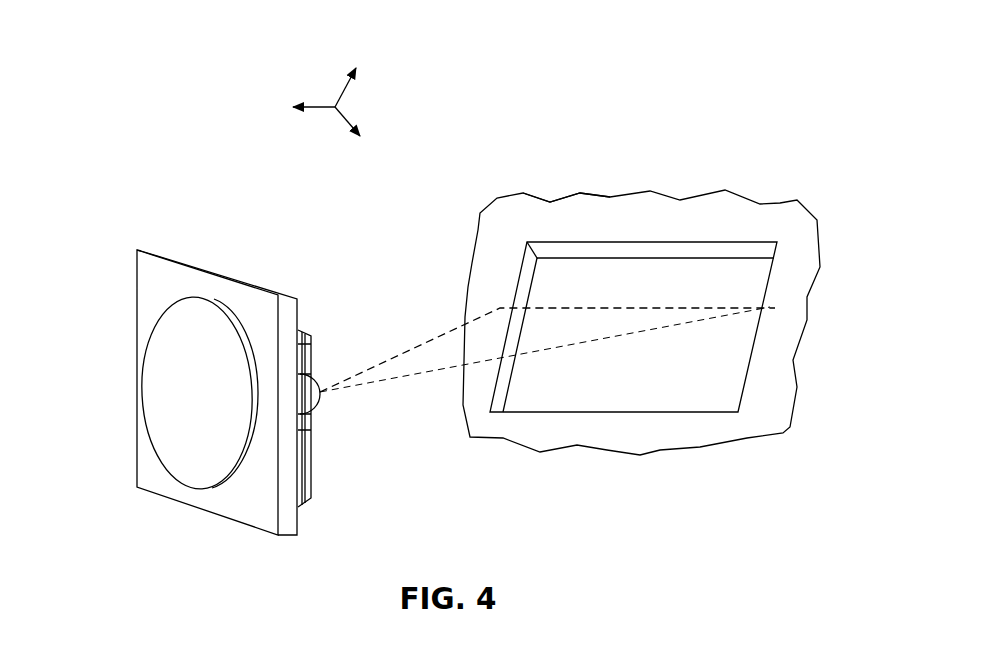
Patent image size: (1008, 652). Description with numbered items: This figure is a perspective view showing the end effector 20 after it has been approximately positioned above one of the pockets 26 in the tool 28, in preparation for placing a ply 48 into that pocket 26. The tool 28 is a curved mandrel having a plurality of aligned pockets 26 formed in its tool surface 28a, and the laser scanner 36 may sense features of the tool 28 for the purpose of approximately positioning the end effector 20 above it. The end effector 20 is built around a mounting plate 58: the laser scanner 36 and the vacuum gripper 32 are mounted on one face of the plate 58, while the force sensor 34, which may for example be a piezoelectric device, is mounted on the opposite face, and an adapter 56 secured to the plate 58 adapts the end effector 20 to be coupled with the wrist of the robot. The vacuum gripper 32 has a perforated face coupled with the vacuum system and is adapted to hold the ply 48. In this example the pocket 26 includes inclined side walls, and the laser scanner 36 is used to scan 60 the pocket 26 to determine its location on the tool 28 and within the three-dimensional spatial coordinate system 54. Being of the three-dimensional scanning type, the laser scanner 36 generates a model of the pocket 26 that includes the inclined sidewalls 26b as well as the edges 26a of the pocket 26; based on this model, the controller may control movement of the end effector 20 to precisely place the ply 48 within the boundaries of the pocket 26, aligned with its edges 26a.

The end effector 20 is at (240, 348).
The mounting plate 58 is at (168, 290).
The adapter 56 is at (182, 456).
The force sensor 34 is at (244, 334).
The vacuum gripper 32 is at (300, 328).
The ply 48 is at (315, 352).
The laser scanner 36 is at (305, 402).
The scan 60 is at (421, 359).
The 3-D spatial coordinate system 54 is at (321, 86).
The tool 28 is at (625, 158).
The tool surface 28a is at (556, 221).
The pocket 26 is at (677, 381).
The edges of the pocket 26a is at (509, 276).
The inclined sidewalls 26b is at (573, 253).